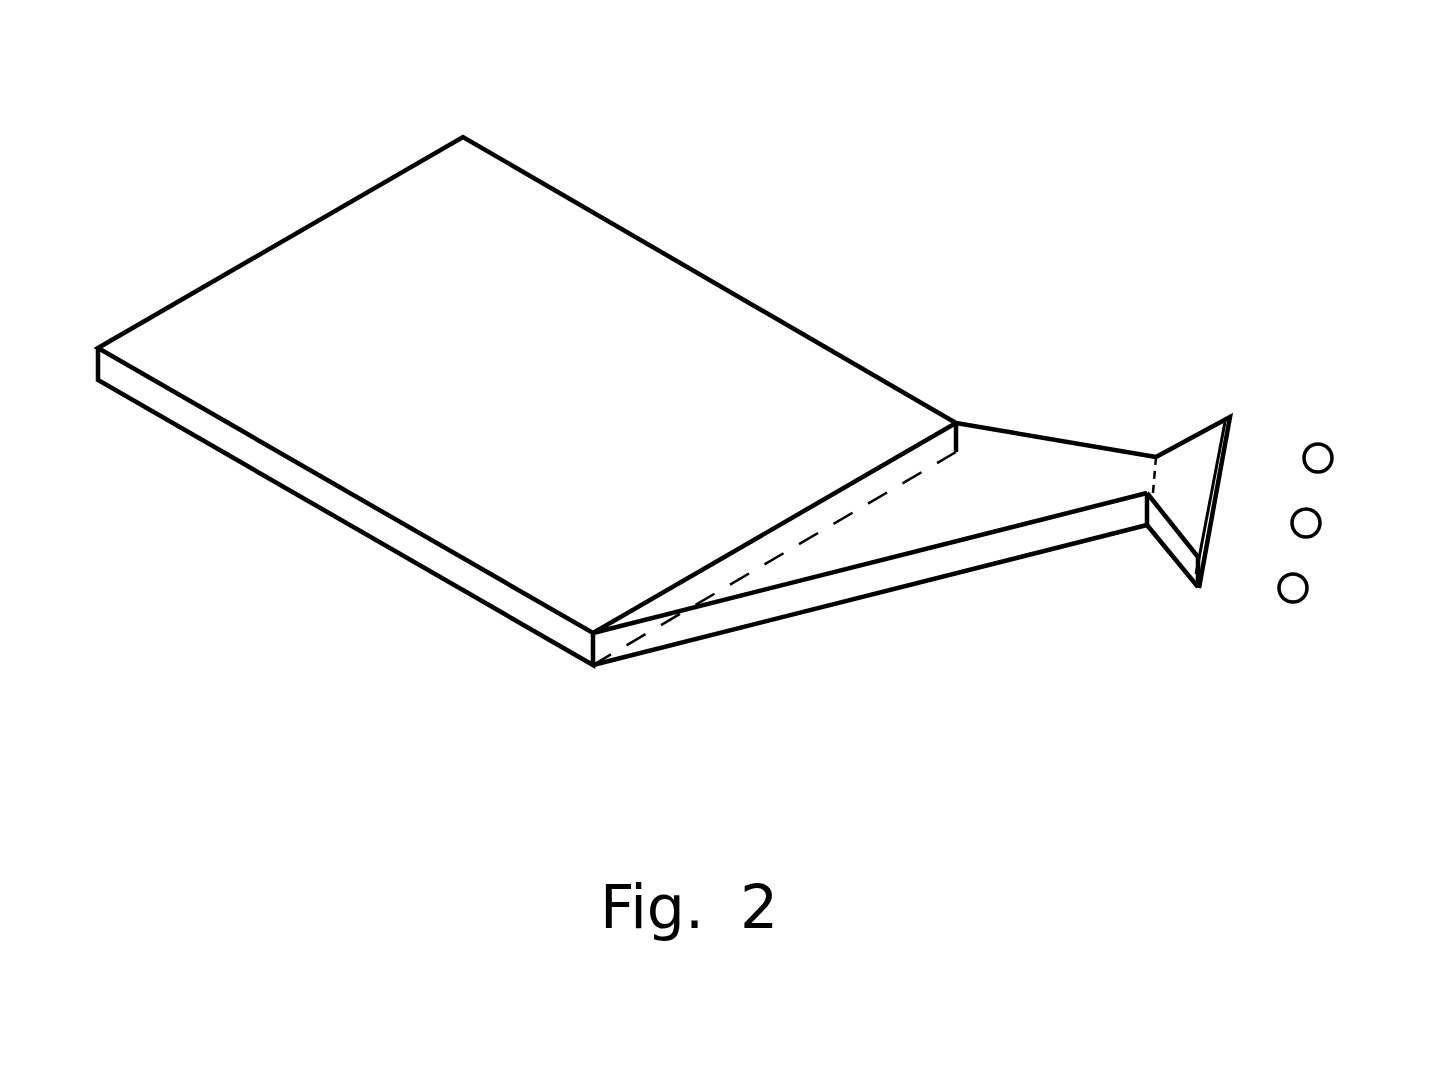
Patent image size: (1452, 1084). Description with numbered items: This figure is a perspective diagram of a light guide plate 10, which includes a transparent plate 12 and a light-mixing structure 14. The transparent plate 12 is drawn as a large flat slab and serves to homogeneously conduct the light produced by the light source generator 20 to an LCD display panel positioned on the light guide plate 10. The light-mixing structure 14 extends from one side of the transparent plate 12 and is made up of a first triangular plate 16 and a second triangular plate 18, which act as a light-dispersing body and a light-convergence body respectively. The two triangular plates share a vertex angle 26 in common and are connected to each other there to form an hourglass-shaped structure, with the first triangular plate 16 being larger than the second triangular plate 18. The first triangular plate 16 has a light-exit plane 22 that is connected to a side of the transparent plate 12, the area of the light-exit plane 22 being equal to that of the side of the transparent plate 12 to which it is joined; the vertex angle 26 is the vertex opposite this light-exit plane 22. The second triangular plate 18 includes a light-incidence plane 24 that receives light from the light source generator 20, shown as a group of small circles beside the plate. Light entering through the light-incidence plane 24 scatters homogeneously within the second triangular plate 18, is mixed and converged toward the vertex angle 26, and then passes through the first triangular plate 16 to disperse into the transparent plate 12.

The light guide plate 10 is at (818, 178).
The transparent plate 12 is at (558, 403).
The light-mixing structure 14 is at (1200, 683).
The first triangular plate 16 is at (1013, 450).
The second triangular plate 18 is at (1202, 447).
The light source generator 20 is at (1322, 458).
The light-exit plane 22 is at (918, 458).
The light-incidence plane 24 is at (1215, 553).
The vertex angle 26 is at (1150, 490).